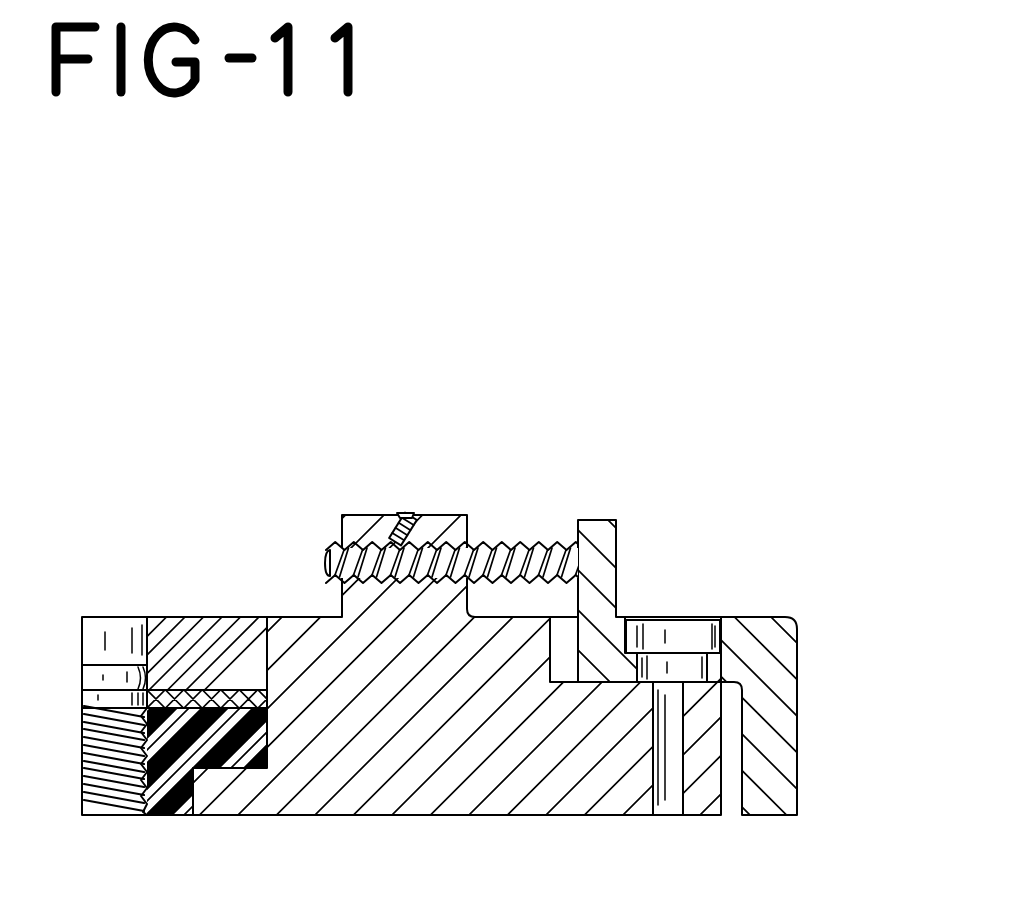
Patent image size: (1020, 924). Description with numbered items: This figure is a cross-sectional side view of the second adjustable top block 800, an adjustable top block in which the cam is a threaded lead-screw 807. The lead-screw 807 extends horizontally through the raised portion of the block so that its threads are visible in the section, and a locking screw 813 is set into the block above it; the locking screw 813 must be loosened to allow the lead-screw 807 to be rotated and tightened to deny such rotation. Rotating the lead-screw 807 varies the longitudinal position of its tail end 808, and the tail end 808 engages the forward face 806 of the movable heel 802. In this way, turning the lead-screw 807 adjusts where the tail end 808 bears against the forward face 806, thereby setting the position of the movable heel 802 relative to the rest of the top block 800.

The second adjustable top block 800 is at (277, 340).
The movable heel 802 is at (752, 618).
The forward face 806 is at (577, 545).
The threaded lead-screw 807 is at (486, 545).
The tail end 808 is at (538, 545).
The locking screw 813 is at (403, 517).